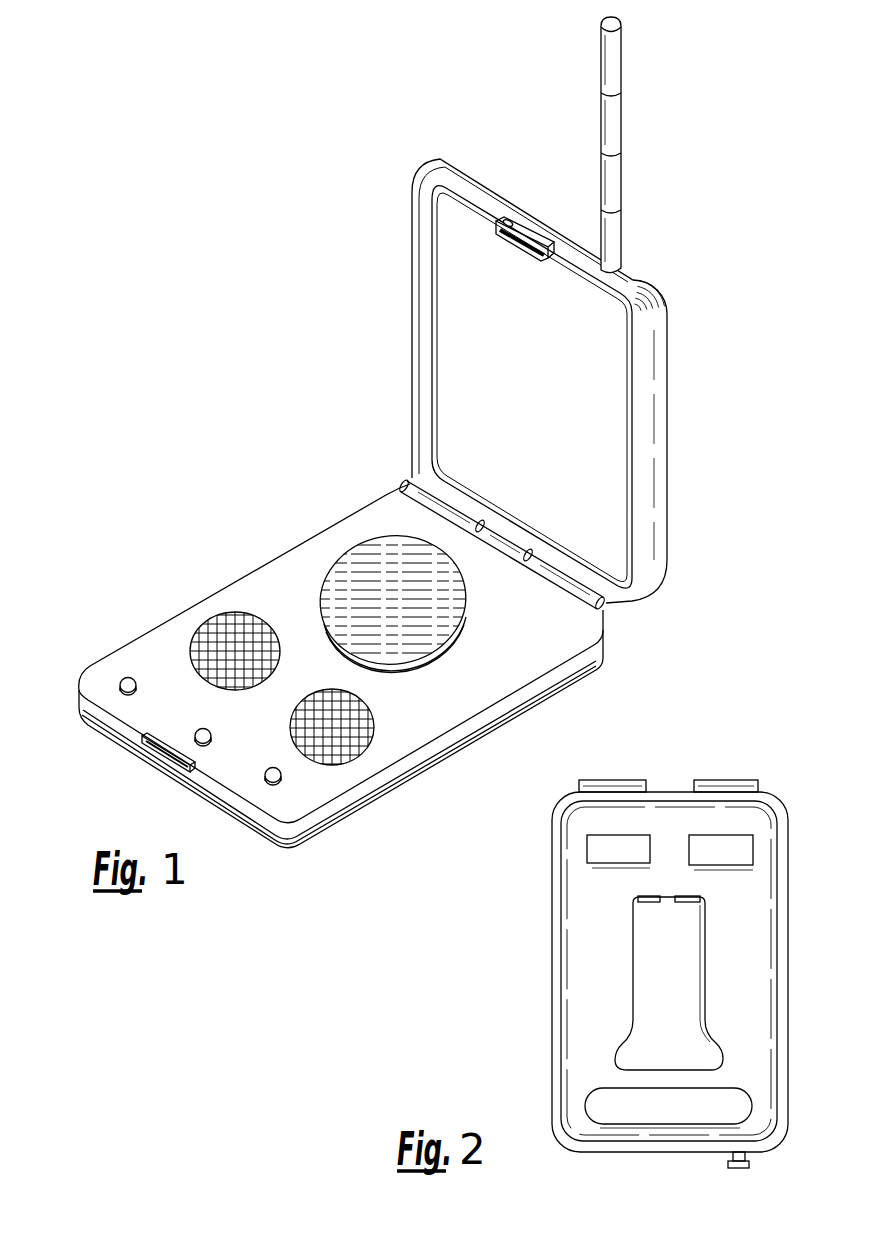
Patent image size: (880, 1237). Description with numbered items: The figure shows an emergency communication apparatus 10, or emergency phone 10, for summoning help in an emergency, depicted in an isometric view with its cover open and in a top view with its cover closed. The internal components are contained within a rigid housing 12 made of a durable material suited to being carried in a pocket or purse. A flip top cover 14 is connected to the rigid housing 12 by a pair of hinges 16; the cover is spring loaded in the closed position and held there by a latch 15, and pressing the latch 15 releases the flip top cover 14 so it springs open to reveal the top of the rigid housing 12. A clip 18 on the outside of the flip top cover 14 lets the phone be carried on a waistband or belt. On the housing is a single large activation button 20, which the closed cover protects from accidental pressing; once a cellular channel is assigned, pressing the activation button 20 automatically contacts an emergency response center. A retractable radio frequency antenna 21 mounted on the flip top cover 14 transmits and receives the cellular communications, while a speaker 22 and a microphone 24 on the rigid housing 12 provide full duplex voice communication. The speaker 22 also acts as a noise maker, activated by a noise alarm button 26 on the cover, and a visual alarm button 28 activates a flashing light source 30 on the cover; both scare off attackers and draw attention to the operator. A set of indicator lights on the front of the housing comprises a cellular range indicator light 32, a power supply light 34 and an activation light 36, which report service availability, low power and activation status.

In FIG. 1, the emergency communication apparatus 10 is at (262, 498).
In FIG. 1, the rigid housing 12 is at (80, 698).
In FIG. 1, the flip top cover 14 is at (457, 162).
In FIG. 1, the latch 15 is at (520, 233).
In FIG. 1, the hinges 16 is at (410, 487).
In FIG. 2, the hinges 16 is at (597, 782).
In FIG. 2, the clip 18 is at (632, 1003).
In FIG. 1, the activation button 20 is at (461, 628).
In FIG. 1, the radio frequency antenna 21 is at (622, 119).
In FIG. 2, the radio frequency antenna 21 is at (728, 1165).
In FIG. 1, the speaker 22 is at (232, 613).
In FIG. 1, the microphone 24 is at (368, 745).
In FIG. 2, the noise alarm button 26 is at (645, 836).
In FIG. 2, the visual alarm button 28 is at (750, 836).
In FIG. 2, the flashing light source 30 is at (590, 1092).
In FIG. 1, the cellular range indicator light 32 is at (120, 700).
In FIG. 1, the power supply light 34 is at (198, 752).
In FIG. 1, the activation light 36 is at (268, 790).